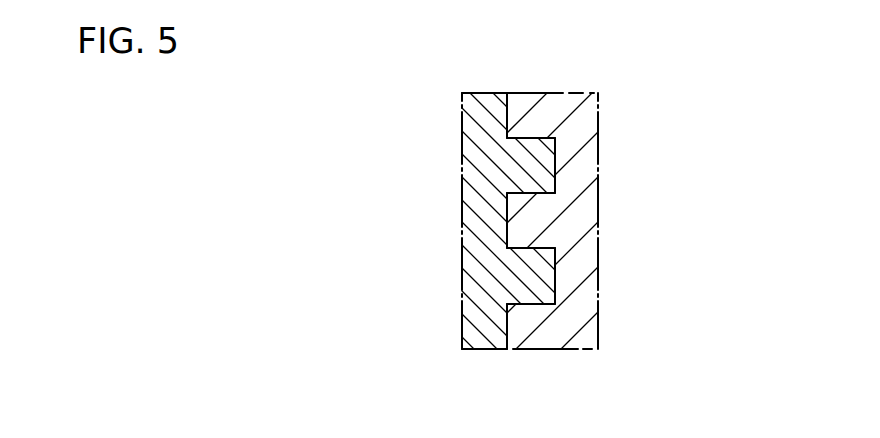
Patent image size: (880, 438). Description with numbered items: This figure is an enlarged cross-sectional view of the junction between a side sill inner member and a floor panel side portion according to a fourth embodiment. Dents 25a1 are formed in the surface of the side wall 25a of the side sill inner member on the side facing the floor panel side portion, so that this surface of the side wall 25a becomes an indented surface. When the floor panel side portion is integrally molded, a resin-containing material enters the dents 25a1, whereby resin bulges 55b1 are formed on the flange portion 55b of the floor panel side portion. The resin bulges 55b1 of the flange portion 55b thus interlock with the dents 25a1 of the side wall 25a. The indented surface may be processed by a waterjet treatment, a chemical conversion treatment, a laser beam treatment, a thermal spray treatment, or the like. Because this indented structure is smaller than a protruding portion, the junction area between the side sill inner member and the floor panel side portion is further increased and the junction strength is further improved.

The flange portion 55b is at (484, 233).
The resin bulges 55b1 is at (540, 183).
The side wall 25a is at (587, 344).
The dents 25a1 is at (554, 167).